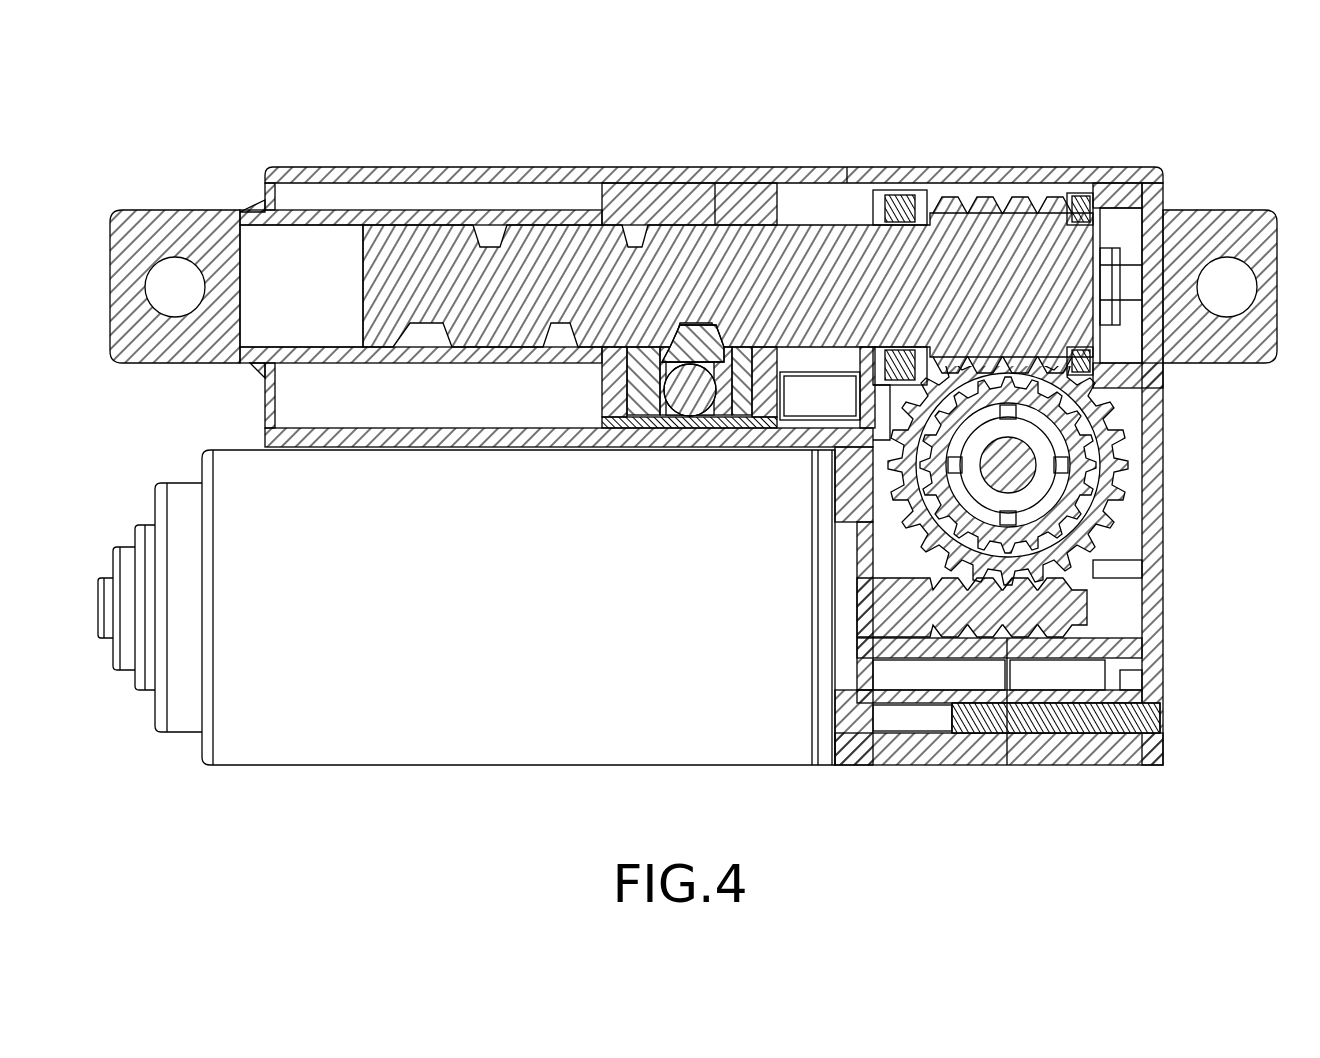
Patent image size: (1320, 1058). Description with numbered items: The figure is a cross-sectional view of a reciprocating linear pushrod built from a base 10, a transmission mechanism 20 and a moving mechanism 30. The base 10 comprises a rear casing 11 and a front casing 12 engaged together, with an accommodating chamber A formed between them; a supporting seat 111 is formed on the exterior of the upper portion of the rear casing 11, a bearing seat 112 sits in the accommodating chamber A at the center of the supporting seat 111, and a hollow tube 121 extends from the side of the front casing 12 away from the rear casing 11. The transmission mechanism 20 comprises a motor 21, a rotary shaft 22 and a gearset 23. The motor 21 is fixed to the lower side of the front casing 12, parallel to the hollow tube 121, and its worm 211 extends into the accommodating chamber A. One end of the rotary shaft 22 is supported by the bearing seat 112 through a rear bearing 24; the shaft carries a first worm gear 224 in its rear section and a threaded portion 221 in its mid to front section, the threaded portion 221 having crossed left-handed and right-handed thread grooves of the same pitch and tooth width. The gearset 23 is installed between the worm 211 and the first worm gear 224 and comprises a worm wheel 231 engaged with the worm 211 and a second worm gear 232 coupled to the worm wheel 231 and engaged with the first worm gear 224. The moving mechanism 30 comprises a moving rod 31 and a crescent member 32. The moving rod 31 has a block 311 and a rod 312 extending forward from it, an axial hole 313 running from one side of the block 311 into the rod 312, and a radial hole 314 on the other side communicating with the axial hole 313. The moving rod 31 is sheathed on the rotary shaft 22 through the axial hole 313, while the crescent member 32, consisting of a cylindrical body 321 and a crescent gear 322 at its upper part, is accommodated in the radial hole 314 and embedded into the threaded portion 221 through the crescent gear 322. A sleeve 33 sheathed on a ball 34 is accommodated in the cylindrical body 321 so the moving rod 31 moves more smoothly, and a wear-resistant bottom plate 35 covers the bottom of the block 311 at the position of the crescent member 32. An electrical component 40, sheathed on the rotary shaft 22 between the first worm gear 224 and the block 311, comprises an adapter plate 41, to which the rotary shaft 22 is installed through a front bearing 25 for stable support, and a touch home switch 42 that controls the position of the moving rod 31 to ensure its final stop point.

The base 10 is at (768, 404).
The rear casing 11 is at (1066, 404).
The supporting seat 111 is at (1230, 207).
The bearing seat 112 is at (1122, 207).
The front casing 12 is at (701, 245).
The hollow tube 121 is at (505, 167).
The transmission mechanism 20 is at (671, 650).
The motor 21 is at (467, 753).
The worm 211 is at (1107, 603).
The rotary shaft 22 is at (728, 233).
The threaded portion 221 is at (637, 213).
The first worm gear 224 is at (982, 207).
The gearset 23 is at (1101, 465).
The worm wheel 231 is at (1123, 418).
The second worm gear 232 is at (1130, 500).
The rear bearing 24 is at (1067, 198).
The front bearing 25 is at (917, 207).
The moving mechanism 30 is at (593, 242).
The moving rod 31 is at (386, 242).
The block 311 is at (672, 187).
The rod 312 is at (157, 213).
The axial hole 313 is at (272, 250).
The radial hole 314 is at (627, 380).
The crescent member 32 is at (624, 431).
The cylindrical body 321 is at (630, 400).
The crescent gear 322 is at (658, 348).
The sleeve 33 is at (667, 418).
The ball 34 is at (693, 405).
The bottom plate 35 is at (718, 427).
The electrical component 40 is at (856, 244).
The adapter plate 41 is at (830, 385).
The touch home switch 42 is at (846, 183).
The accommodating chamber A is at (1120, 573).